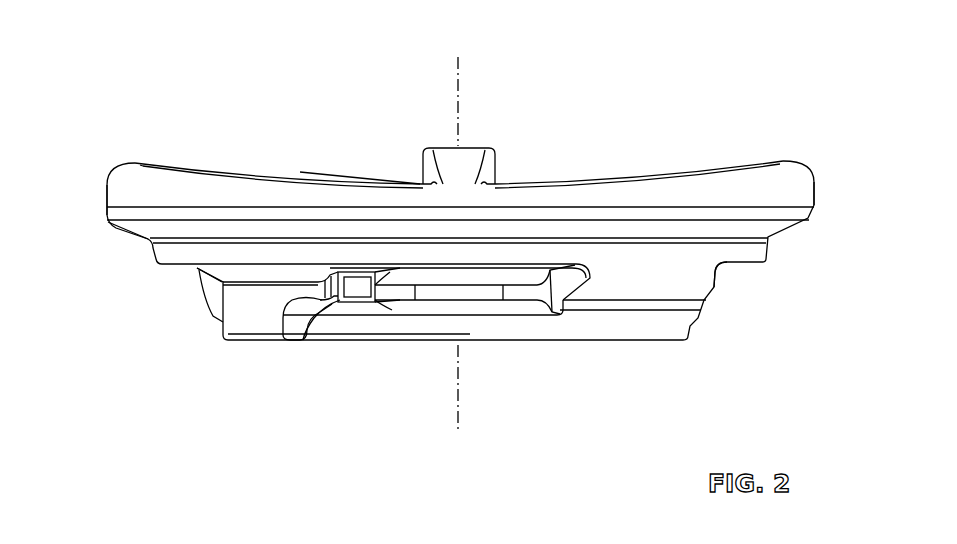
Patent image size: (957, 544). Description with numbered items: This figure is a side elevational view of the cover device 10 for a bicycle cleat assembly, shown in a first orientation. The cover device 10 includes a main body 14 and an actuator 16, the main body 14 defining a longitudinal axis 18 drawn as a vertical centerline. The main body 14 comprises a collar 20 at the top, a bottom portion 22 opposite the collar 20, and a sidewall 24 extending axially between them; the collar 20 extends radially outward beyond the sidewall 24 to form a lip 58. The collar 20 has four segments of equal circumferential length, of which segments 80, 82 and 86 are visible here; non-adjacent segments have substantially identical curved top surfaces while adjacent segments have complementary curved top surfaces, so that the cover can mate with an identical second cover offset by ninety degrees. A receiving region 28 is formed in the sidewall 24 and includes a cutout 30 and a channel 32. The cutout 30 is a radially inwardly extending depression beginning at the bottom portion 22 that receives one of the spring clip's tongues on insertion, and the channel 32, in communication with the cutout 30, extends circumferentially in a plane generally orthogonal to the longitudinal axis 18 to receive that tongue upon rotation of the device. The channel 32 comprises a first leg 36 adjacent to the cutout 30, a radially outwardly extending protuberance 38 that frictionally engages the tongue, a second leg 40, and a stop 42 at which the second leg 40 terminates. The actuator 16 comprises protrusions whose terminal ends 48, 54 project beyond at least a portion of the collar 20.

The cover device 10 is at (460, 233).
The main body 14 is at (780, 270).
The actuator 16 is at (465, 146).
The longitudinal axis 18 is at (460, 102).
The collar 20 is at (160, 163).
The bottom portion 22 is at (578, 340).
The sidewall 24 is at (712, 287).
The receiving region 28 is at (203, 310).
The cutout 30 is at (257, 313).
The channel 32 is at (434, 335).
The first leg 36 is at (324, 306).
The protuberance 38 is at (347, 292).
The second leg 40 is at (455, 297).
The stop 42 is at (572, 280).
The terminal end 48 is at (494, 151).
The terminal end 54 is at (463, 146).
The lip 58 is at (130, 233).
The segment 80 is at (465, 193).
The segment 82 is at (105, 192).
The segment 86 is at (816, 187).